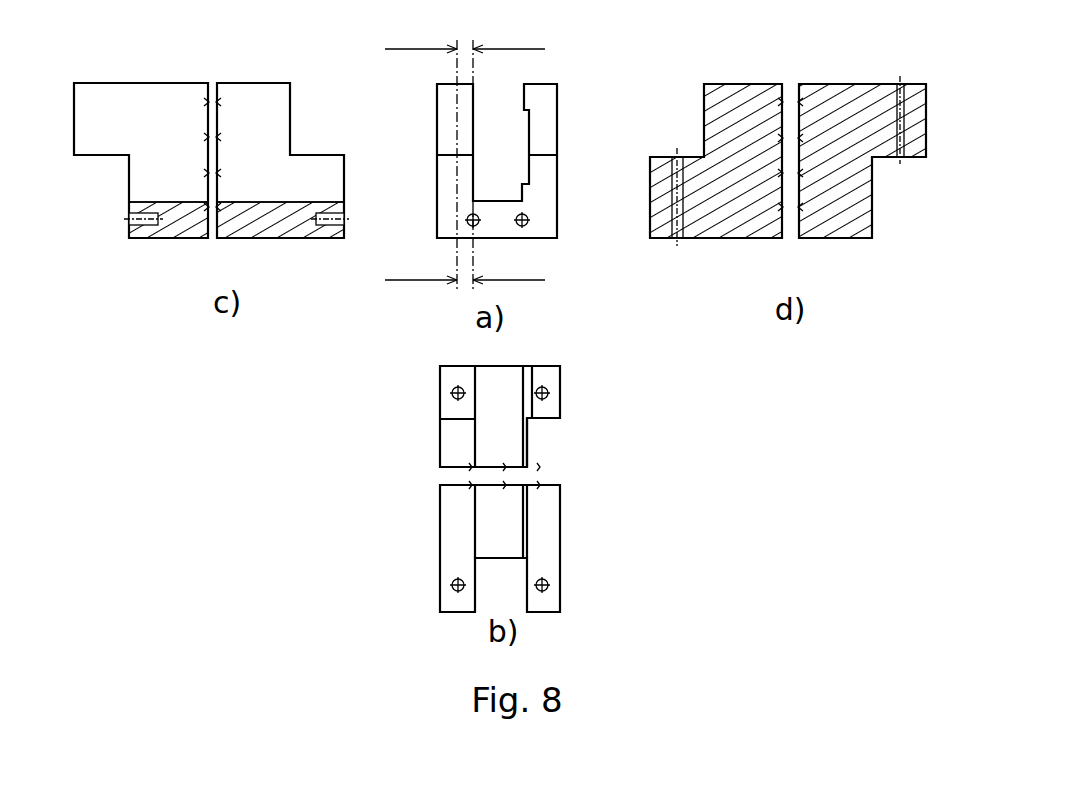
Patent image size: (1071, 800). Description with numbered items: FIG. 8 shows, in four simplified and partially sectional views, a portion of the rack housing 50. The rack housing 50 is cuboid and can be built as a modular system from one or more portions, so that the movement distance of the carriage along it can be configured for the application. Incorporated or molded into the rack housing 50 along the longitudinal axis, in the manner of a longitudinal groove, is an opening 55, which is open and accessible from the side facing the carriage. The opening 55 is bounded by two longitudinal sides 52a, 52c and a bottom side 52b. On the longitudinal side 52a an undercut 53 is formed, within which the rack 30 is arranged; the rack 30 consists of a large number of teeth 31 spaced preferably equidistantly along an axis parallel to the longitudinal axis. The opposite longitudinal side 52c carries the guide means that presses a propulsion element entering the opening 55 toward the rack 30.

The rack housing 50 is at (110, 194).
The opening 55 is at (133, 115).
The longitudinal side 52a is at (532, 152).
The bottom side 52b is at (191, 198).
The longitudinal side 52c is at (278, 156).
The undercut 53 is at (528, 124).
The rack 30 is at (530, 157).
The teeth 31 is at (500, 150).